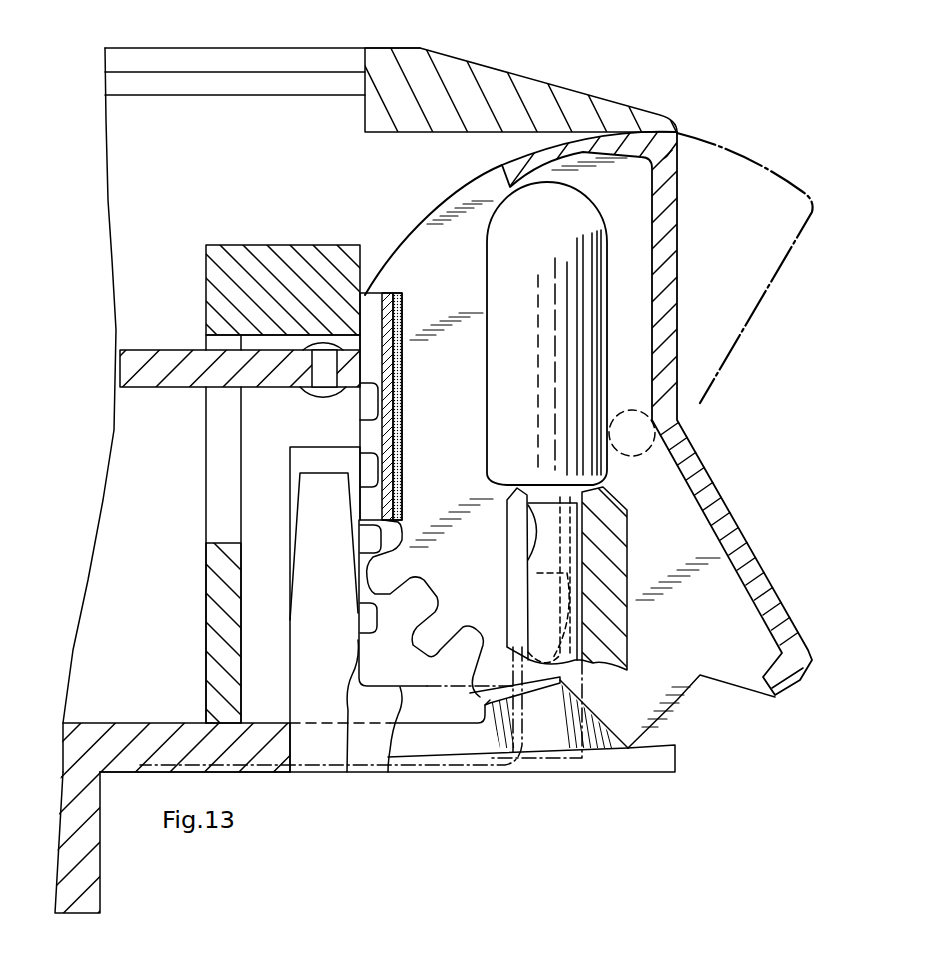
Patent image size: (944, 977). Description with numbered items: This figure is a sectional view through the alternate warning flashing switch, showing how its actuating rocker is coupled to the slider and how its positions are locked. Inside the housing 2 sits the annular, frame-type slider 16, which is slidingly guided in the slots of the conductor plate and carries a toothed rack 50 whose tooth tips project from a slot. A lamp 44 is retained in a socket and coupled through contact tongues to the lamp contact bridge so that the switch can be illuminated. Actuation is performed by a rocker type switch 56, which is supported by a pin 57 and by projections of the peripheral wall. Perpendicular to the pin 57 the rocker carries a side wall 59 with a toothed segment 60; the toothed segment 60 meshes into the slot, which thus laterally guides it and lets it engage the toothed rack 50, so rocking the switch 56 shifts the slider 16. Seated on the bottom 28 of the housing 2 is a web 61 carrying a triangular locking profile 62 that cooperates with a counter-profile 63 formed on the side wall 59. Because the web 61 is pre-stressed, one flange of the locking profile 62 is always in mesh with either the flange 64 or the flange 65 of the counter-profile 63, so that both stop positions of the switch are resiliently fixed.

The housing 2 is at (90, 864).
The bottom 28 is at (115, 745).
The slider 16 is at (255, 248).
The lamp 44 is at (512, 355).
The toothed rack 50 is at (345, 772).
The rocker type switch 56 is at (672, 353).
The pin 57 is at (665, 441).
The side wall 59 is at (430, 233).
The toothed segment 60 is at (378, 578).
The web 61 is at (452, 740).
The triangular locking profile 62 is at (560, 700).
The counter-profile 63 is at (628, 748).
The flange 64 is at (590, 712).
The flange 65 is at (688, 705).